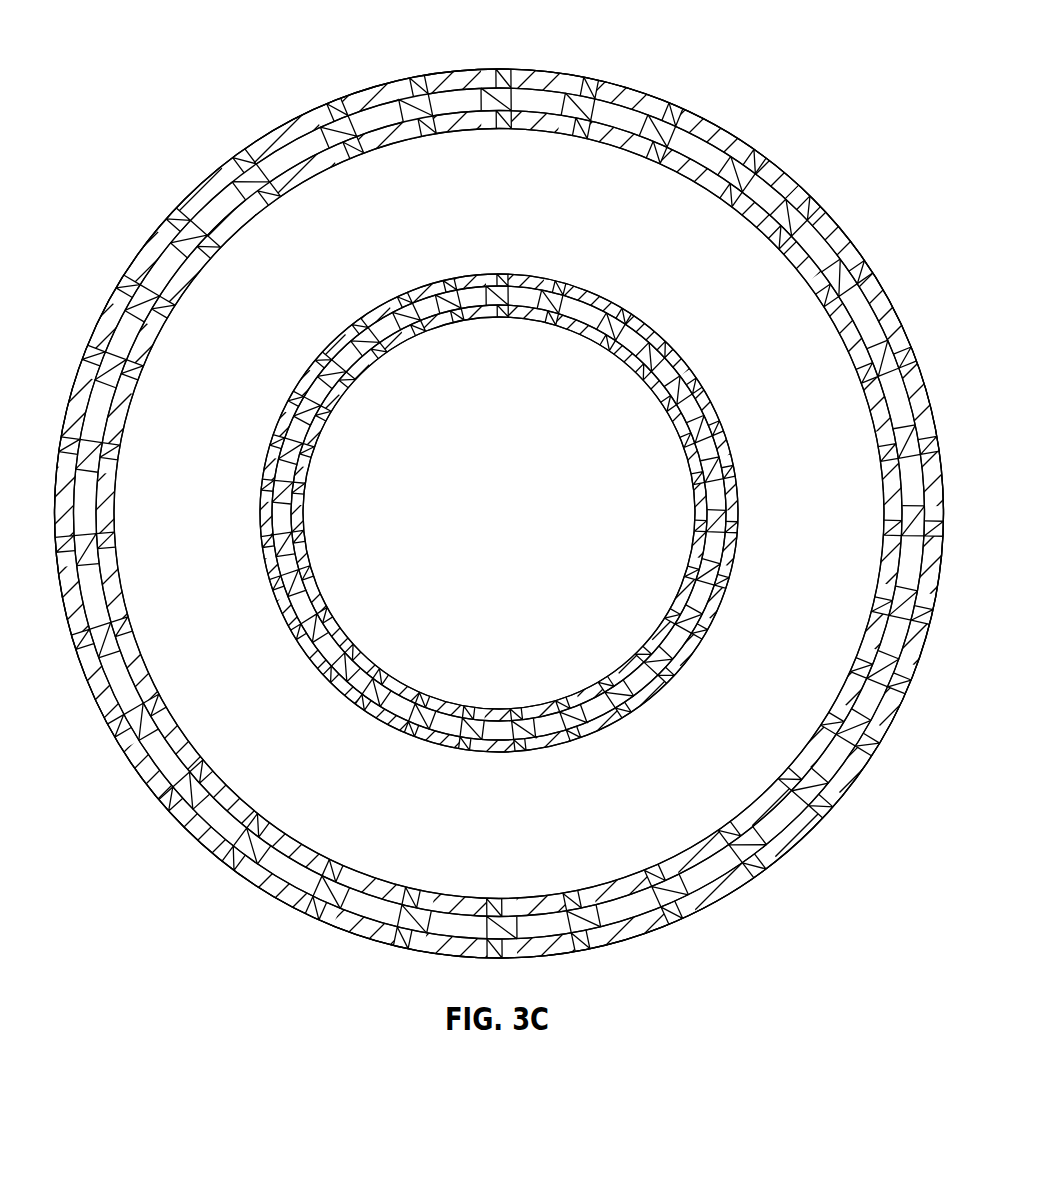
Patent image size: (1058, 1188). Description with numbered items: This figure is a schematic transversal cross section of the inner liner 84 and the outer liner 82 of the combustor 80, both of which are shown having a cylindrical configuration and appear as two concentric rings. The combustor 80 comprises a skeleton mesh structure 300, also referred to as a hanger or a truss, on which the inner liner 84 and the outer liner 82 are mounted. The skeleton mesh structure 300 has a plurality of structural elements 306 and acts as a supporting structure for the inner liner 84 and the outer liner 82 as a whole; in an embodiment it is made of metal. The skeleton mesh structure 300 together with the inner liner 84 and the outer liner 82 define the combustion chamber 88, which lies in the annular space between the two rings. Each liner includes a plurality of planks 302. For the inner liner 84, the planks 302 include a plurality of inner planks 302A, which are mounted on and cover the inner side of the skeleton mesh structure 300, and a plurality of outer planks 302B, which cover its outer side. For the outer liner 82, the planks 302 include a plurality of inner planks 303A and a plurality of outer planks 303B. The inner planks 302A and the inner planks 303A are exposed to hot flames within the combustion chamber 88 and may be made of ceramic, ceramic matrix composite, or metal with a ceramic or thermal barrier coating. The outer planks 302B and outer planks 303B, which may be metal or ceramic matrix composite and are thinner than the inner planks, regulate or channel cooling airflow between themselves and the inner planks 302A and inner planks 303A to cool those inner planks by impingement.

The combustor 80 is at (800, 52).
The outer liner 82 is at (778, 156).
The inner liner 84 is at (697, 655).
The combustion chamber 88 is at (630, 256).
The skeleton mesh structure 300 is at (408, 92).
The planks 302 is at (848, 248).
The inner planks 302A is at (265, 515).
The outer planks 302B is at (297, 502).
The inner planks 303A is at (475, 120).
The outer planks 303B is at (538, 78).
The structural elements 306 is at (253, 165).